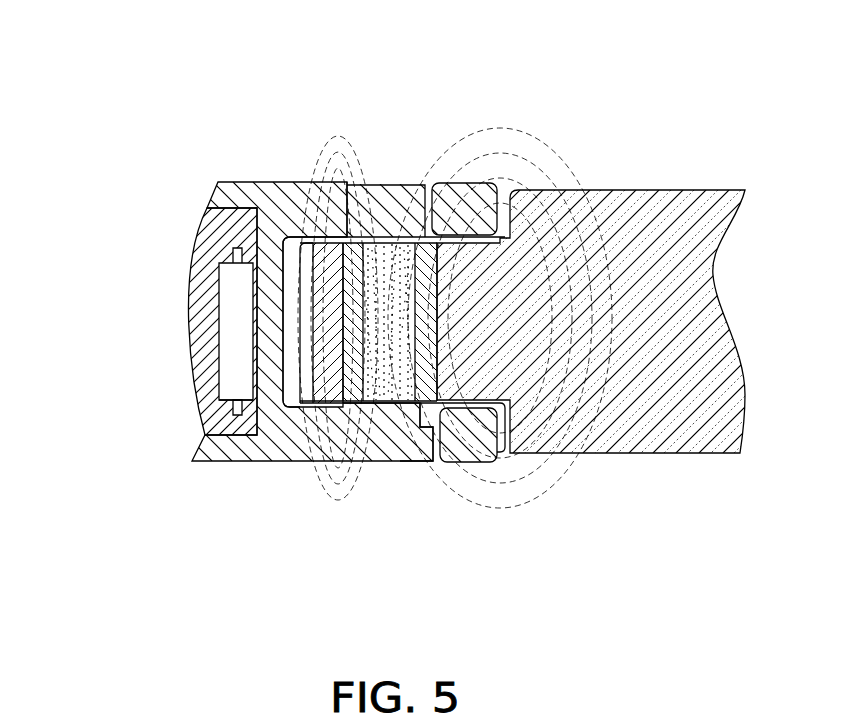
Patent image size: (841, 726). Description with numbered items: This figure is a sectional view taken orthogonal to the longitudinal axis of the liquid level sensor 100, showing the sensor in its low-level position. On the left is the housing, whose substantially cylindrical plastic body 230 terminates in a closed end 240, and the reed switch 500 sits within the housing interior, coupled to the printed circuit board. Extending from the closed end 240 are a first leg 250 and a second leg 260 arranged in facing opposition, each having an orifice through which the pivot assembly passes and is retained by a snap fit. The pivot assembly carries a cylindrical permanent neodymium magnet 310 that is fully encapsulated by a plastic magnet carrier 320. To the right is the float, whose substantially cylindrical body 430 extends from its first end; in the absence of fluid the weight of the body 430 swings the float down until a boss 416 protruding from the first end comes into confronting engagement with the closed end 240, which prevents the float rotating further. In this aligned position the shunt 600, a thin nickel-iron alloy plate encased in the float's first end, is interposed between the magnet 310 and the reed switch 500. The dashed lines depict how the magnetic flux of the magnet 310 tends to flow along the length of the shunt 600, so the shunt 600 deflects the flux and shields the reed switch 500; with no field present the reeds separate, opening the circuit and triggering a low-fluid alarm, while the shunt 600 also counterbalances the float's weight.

The liquid level sensor 100 is at (561, 118).
The body 230 is at (232, 182).
The closed end 240 is at (248, 426).
The first leg 250 is at (497, 438).
The second leg 260 is at (297, 182).
The magnet 310 is at (392, 242).
The magnet carrier 320 is at (436, 450).
The boss 416 is at (290, 408).
The body 430 is at (657, 190).
The reed switch 500 is at (228, 272).
The shunt 600 is at (338, 418).